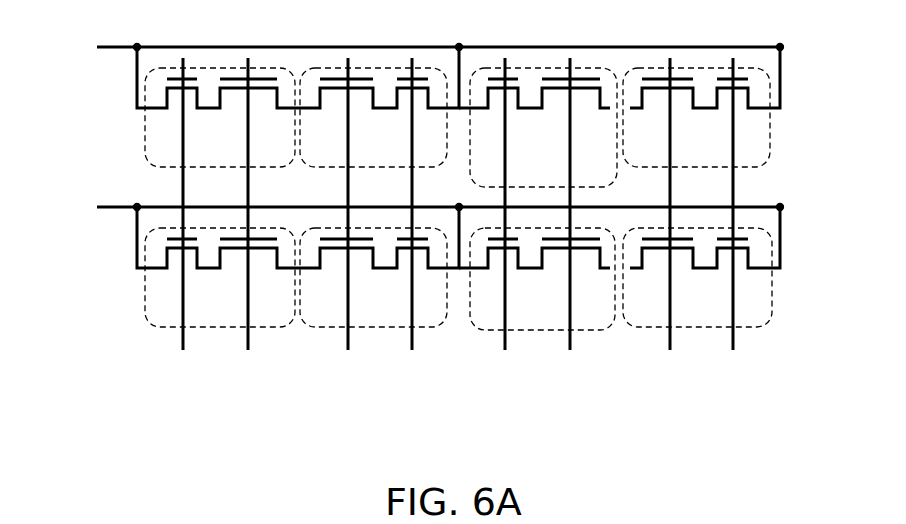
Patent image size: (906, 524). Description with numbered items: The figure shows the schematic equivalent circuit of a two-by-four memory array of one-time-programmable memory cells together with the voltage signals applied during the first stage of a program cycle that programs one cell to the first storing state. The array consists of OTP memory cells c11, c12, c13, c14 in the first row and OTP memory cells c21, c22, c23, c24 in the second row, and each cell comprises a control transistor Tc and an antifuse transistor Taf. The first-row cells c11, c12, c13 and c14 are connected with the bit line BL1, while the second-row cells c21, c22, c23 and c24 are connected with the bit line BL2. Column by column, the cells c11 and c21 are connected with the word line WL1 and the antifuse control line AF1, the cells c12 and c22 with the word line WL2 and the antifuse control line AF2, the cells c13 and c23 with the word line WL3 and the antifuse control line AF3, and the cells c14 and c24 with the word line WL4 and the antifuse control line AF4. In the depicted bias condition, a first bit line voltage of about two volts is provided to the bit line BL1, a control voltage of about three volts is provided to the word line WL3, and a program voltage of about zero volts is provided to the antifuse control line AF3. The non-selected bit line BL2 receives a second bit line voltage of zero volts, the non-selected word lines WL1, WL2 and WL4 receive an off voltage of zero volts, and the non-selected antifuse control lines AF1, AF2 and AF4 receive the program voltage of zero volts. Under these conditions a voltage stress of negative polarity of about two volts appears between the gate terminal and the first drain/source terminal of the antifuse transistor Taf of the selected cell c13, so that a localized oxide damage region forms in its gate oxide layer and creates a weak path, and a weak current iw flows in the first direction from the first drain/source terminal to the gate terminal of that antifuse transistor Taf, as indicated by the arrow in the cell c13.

The bit line BL1 is at (409, 51).
The bit line BL2 is at (409, 211).
The word line WL1 is at (178, 235).
The word line WL2 is at (430, 235).
The word line WL3 is at (511, 250).
The word line WL4 is at (742, 236).
The antifuse control line AF1 is at (252, 250).
The antifuse control line AF2 is at (350, 250).
The antifuse control line AF3 is at (589, 250).
The antifuse control line AF4 is at (666, 250).
The OTP memory cell c11 is at (218, 107).
The OTP memory cell c12 is at (379, 107).
The OTP memory cell c13 is at (538, 127).
The OTP memory cell c14 is at (701, 107).
The OTP memory cell c21 is at (218, 267).
The OTP memory cell c22 is at (379, 267).
The OTP memory cell c23 is at (537, 279).
The OTP memory cell c24 is at (701, 267).
The control transistor Tc is at (458, 188).
The antifuse transistor Taf is at (456, 188).
The weak current iw is at (553, 66).